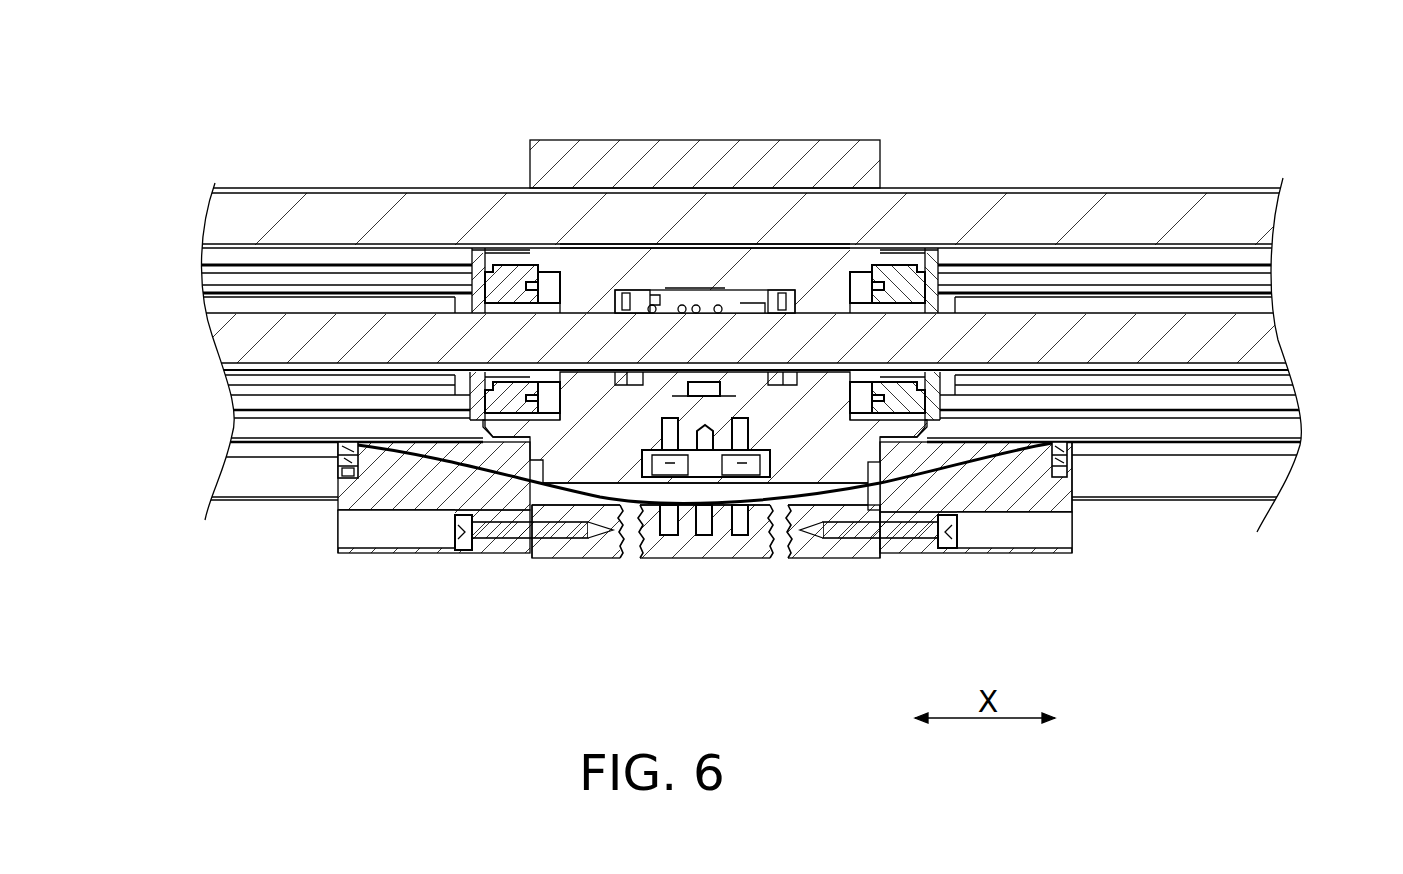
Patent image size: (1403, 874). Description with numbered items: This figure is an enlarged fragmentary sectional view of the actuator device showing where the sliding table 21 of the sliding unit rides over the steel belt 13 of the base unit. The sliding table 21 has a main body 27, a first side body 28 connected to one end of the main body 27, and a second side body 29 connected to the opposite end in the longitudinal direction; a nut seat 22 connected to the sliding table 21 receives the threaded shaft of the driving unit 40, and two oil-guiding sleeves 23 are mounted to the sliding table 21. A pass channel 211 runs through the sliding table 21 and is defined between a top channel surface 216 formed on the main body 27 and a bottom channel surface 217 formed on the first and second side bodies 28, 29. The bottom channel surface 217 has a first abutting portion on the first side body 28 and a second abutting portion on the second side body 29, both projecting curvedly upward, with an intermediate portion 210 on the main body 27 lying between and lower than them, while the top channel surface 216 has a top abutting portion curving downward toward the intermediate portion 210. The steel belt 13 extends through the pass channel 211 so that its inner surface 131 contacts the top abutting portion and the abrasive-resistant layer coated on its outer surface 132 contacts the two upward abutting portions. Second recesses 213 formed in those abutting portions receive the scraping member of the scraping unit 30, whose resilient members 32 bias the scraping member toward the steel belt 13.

The steel belt 13 is at (575, 490).
The sliding table 21 is at (585, 275).
The nut seat 22 is at (720, 295).
The oil-guiding sleeve 23 is at (505, 278).
The main body 27 is at (695, 258).
The first side body 28 is at (392, 553).
The second side body 29 is at (1032, 552).
The scraping unit 30 is at (342, 460).
The resilient member 32 is at (348, 478).
The driving unit 40 is at (1236, 301).
The inner surface 131 is at (272, 440).
The outer surface 132 is at (262, 443).
The intermediate portion 210 is at (792, 513).
The pass channel 211 is at (862, 498).
The second recess 213 is at (657, 546).
The top channel surface 216 is at (822, 475).
The bottom channel surface 217 is at (437, 462).